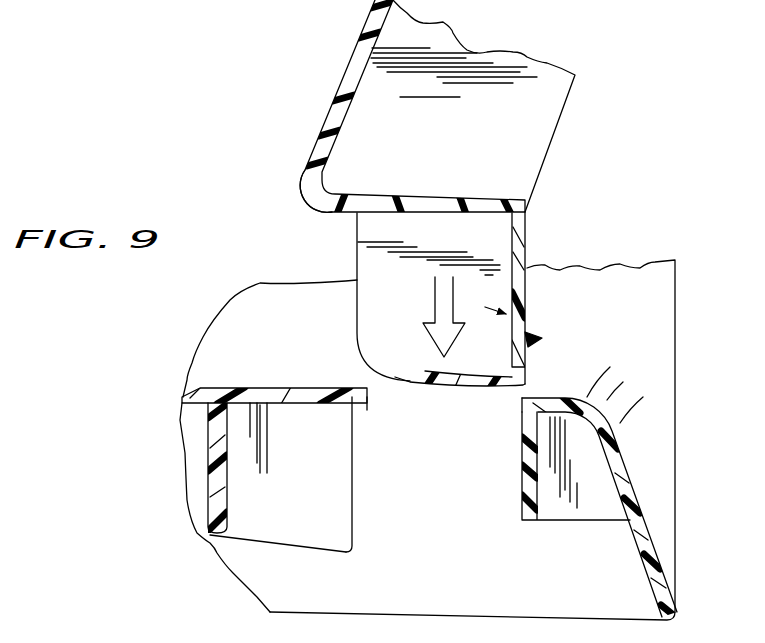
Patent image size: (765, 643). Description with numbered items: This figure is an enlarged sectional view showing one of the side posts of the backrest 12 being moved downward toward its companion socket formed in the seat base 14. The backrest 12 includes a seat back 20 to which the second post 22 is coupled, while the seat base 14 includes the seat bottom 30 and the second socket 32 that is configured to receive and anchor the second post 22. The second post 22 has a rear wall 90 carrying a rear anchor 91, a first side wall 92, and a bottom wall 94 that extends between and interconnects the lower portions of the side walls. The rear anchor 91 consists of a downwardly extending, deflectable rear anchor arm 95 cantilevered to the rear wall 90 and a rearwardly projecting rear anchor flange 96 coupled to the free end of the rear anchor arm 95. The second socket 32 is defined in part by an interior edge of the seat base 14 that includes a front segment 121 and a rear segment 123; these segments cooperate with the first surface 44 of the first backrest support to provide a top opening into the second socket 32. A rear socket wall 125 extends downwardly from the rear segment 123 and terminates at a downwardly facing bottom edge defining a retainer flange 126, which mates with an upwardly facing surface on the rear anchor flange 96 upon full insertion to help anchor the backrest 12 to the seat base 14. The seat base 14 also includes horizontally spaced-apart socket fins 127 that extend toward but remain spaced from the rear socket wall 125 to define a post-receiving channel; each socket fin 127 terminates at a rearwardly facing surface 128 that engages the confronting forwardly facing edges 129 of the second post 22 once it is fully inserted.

The backrest 12 is at (316, 100).
The seat base 14 is at (190, 350).
The seat back 20 is at (317, 142).
The second post 22 is at (543, 294).
The seat bottom 30 is at (168, 428).
The second socket 32 is at (497, 464).
The first surface 44 is at (355, 392).
The rear wall 90 is at (518, 230).
The rear anchor 91 is at (483, 296).
The first side wall 92 is at (411, 320).
The bottom wall 94 is at (480, 380).
The rear anchor arm 95 is at (523, 262).
The rear anchor flange 96 is at (534, 352).
The front segment 121 is at (368, 404).
The rear segment 123 is at (530, 393).
The rear socket wall 125 is at (520, 483).
The retainer flange 126 is at (528, 523).
The socket fin 127 is at (323, 478).
The rearwardly facing surface 128 is at (352, 487).
The forwardly facing edges 129 is at (355, 260).